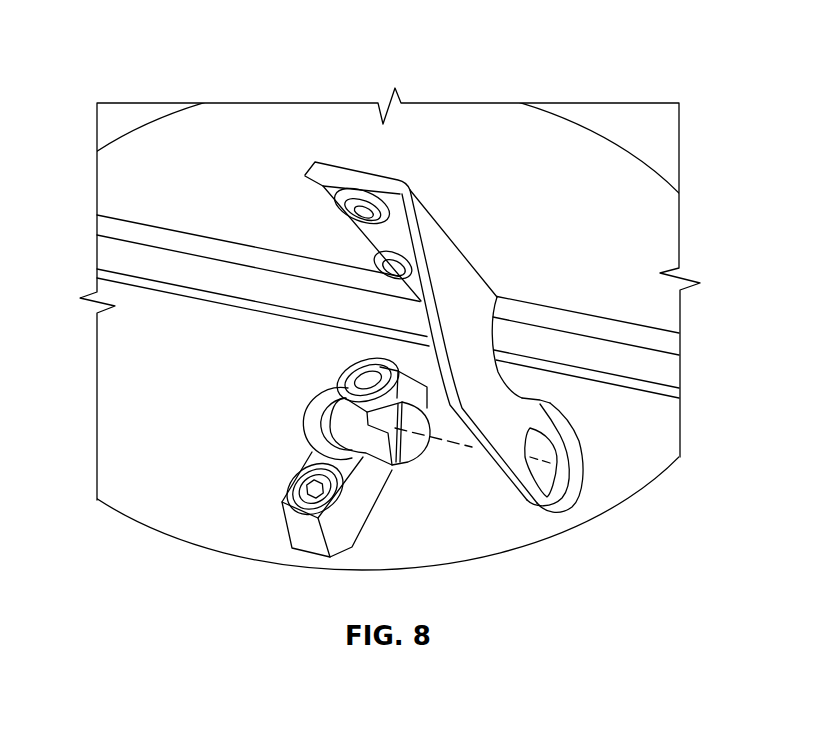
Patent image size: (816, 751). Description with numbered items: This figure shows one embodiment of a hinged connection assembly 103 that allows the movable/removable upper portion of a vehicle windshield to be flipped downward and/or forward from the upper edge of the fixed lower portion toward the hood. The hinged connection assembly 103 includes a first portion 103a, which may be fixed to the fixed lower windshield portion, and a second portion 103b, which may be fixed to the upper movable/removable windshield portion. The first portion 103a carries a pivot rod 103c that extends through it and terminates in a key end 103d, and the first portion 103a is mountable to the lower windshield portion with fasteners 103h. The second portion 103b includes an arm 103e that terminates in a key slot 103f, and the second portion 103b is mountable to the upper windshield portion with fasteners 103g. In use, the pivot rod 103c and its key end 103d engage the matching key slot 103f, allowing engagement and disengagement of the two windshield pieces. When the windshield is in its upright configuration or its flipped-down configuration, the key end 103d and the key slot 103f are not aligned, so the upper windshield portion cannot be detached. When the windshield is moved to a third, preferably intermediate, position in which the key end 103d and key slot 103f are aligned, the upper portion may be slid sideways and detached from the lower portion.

The hinged connection assembly 103 is at (217, 337).
The first portion 103a is at (294, 480).
The second portion 103b is at (450, 240).
The pivot rod 103c is at (343, 418).
The key end 103d is at (412, 450).
The arm 103e is at (495, 397).
The key slot 103f is at (557, 455).
The fasteners 103g is at (325, 187).
The fasteners 103h is at (292, 494).